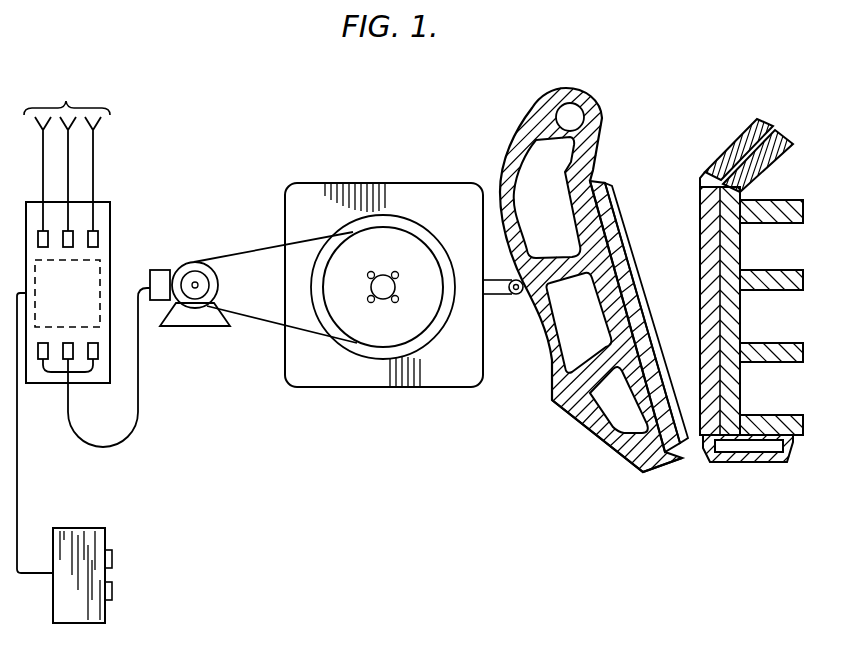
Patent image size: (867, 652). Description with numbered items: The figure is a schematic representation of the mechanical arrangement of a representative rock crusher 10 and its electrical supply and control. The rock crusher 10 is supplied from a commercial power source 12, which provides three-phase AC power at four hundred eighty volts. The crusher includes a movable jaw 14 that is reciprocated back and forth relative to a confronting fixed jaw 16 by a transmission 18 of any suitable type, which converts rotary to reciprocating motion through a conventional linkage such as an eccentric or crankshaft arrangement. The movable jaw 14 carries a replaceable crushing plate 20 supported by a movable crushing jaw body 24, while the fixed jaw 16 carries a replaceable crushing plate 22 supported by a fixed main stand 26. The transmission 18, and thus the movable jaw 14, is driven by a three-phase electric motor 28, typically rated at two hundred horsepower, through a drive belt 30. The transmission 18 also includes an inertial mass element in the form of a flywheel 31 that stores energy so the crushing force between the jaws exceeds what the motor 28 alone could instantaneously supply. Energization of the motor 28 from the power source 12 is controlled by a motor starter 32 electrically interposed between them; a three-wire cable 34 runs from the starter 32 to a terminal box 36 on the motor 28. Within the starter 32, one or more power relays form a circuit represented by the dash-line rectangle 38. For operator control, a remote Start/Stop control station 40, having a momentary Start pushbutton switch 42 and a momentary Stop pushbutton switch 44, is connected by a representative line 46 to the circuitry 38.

The rock crusher 10 is at (550, 39).
The commercial power source 12 is at (106, 110).
The movable jaw 14 is at (530, 102).
The fixed jaw 16 is at (712, 148).
The transmission 18 is at (423, 183).
The replaceable crushing plate 20 is at (612, 222).
The replaceable crushing plate 22 is at (700, 227).
The movable crushing jaw body 24 is at (590, 428).
The fixed main stand 26 is at (778, 364).
The electric motor 28 is at (197, 262).
The drive belt 30 is at (246, 258).
The flywheel 31 is at (418, 233).
The motor starter 32 is at (110, 219).
The three-wire cable 34 is at (139, 421).
The terminal box 36 is at (167, 269).
The circuit 38 is at (100, 282).
The remote Start/Stop control station 40 is at (94, 530).
The Start pushbutton switch 42 is at (107, 553).
The Stop pushbutton switch 44 is at (108, 603).
The line 46 is at (24, 474).